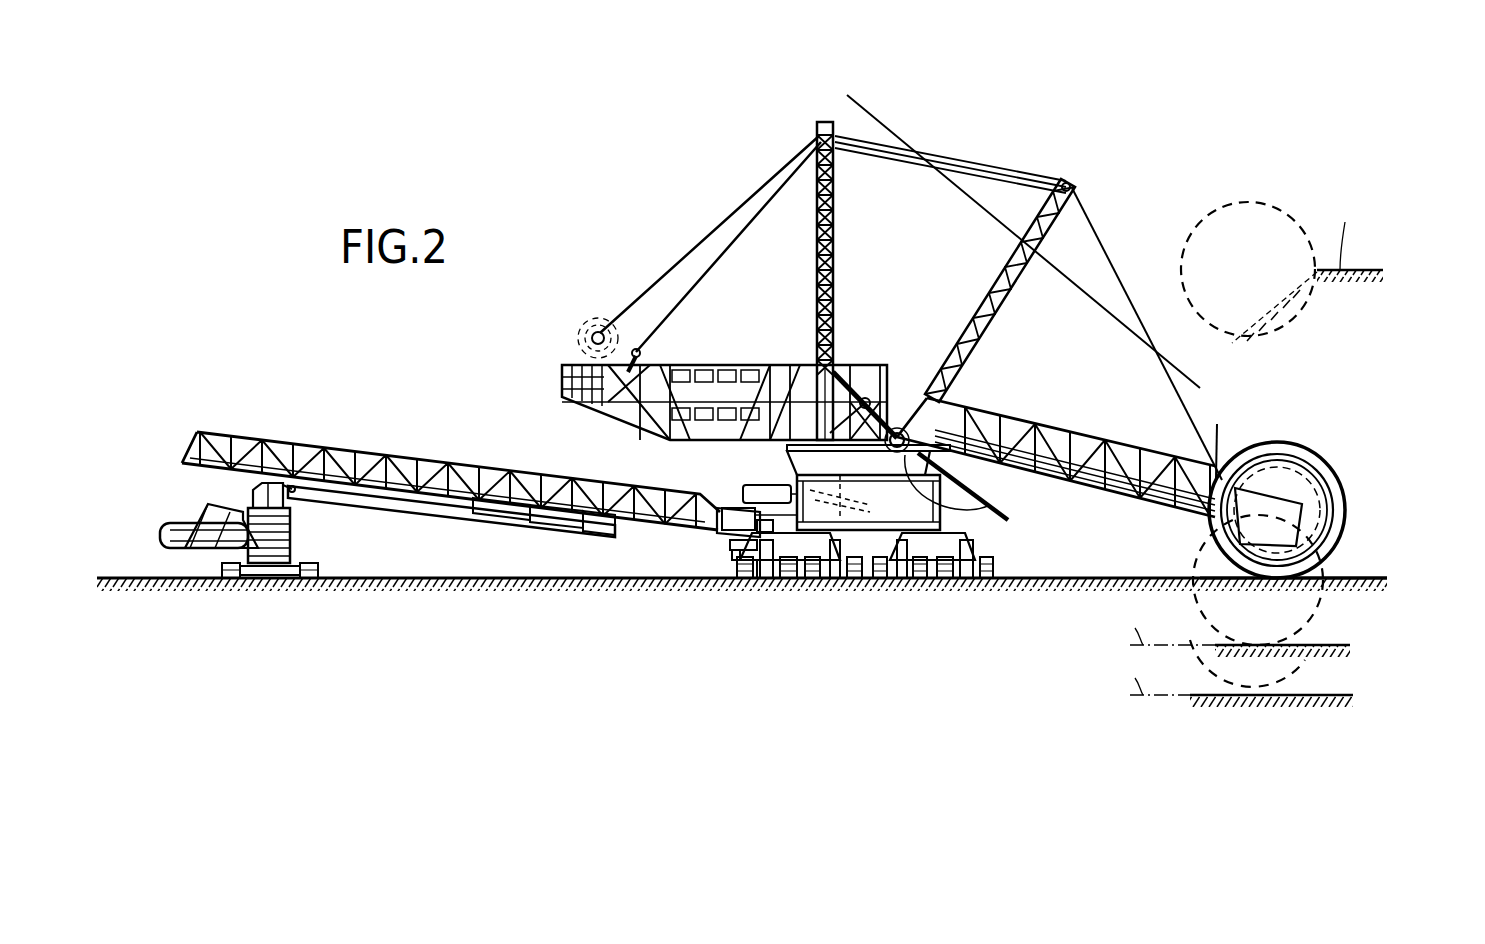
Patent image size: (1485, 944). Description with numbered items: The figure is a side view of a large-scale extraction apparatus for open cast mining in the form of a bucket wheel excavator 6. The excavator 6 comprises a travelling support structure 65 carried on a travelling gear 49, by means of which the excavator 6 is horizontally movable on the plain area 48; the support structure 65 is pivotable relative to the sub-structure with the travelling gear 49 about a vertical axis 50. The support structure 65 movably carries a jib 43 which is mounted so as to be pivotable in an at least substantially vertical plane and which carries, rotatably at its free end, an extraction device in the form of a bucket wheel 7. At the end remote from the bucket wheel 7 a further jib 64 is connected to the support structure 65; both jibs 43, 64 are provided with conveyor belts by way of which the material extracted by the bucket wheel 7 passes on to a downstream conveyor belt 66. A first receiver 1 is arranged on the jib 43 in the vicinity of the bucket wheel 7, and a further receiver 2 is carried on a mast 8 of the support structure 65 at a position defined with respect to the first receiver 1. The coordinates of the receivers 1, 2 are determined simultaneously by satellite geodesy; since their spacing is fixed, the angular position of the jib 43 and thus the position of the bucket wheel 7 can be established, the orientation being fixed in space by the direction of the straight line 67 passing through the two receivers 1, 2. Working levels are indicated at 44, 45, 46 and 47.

The first receiver 1 is at (1155, 334).
The further receiver 2 is at (827, 122).
The bucket wheel excavator 6 is at (860, 540).
The bucket wheel 7 is at (1335, 290).
The mast 8 is at (817, 262).
The jib 43 is at (1115, 500).
The upper bench level 44 is at (1375, 270).
The working level 45 is at (1380, 578).
The first lower cut level 46 is at (1340, 645).
The second lower cut level 47 is at (1340, 695).
The plain area 48 is at (537, 568).
The travelling gear 49 is at (782, 580).
The vertical axis 50 is at (975, 493).
The further jib 64 is at (401, 446).
The support structure 65 is at (876, 400).
The conveyor belt 66 is at (420, 504).
The straight line 67 is at (990, 212).